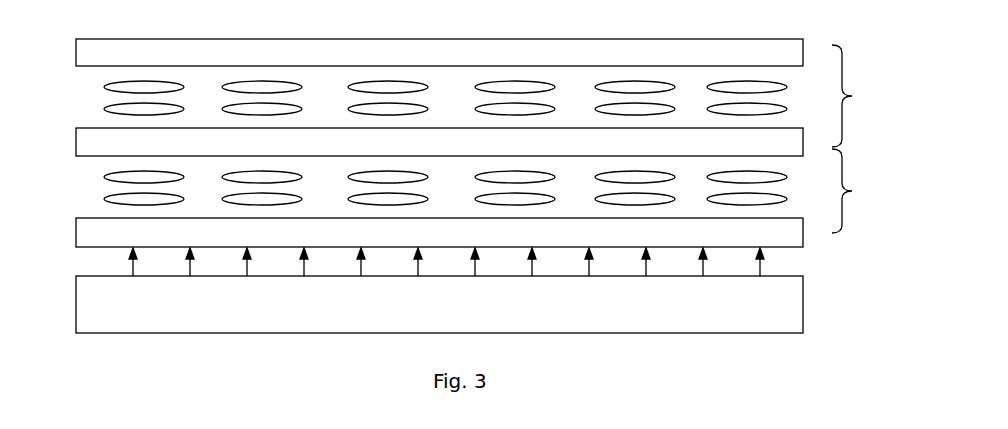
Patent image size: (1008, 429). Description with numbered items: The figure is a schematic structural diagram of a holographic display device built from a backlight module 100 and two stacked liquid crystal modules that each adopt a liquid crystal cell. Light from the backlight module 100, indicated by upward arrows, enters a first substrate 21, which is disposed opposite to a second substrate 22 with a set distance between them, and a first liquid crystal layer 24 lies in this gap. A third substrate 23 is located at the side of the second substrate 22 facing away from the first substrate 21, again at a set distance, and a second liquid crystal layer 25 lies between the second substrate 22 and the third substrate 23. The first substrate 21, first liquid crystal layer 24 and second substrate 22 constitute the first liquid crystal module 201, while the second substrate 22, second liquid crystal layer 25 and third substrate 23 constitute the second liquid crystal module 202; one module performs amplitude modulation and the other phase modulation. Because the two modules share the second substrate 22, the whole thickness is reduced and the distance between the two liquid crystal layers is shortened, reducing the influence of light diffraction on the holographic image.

The backlight module 100 is at (803, 304).
The first substrate 21 is at (76, 233).
The second substrate 22 is at (76, 143).
The third substrate 23 is at (76, 53).
The first liquid crystal layer 24 is at (93, 190).
The second liquid crystal layer 25 is at (102, 94).
The first liquid crystal module 201 is at (866, 191).
The second liquid crystal module 202 is at (866, 96).